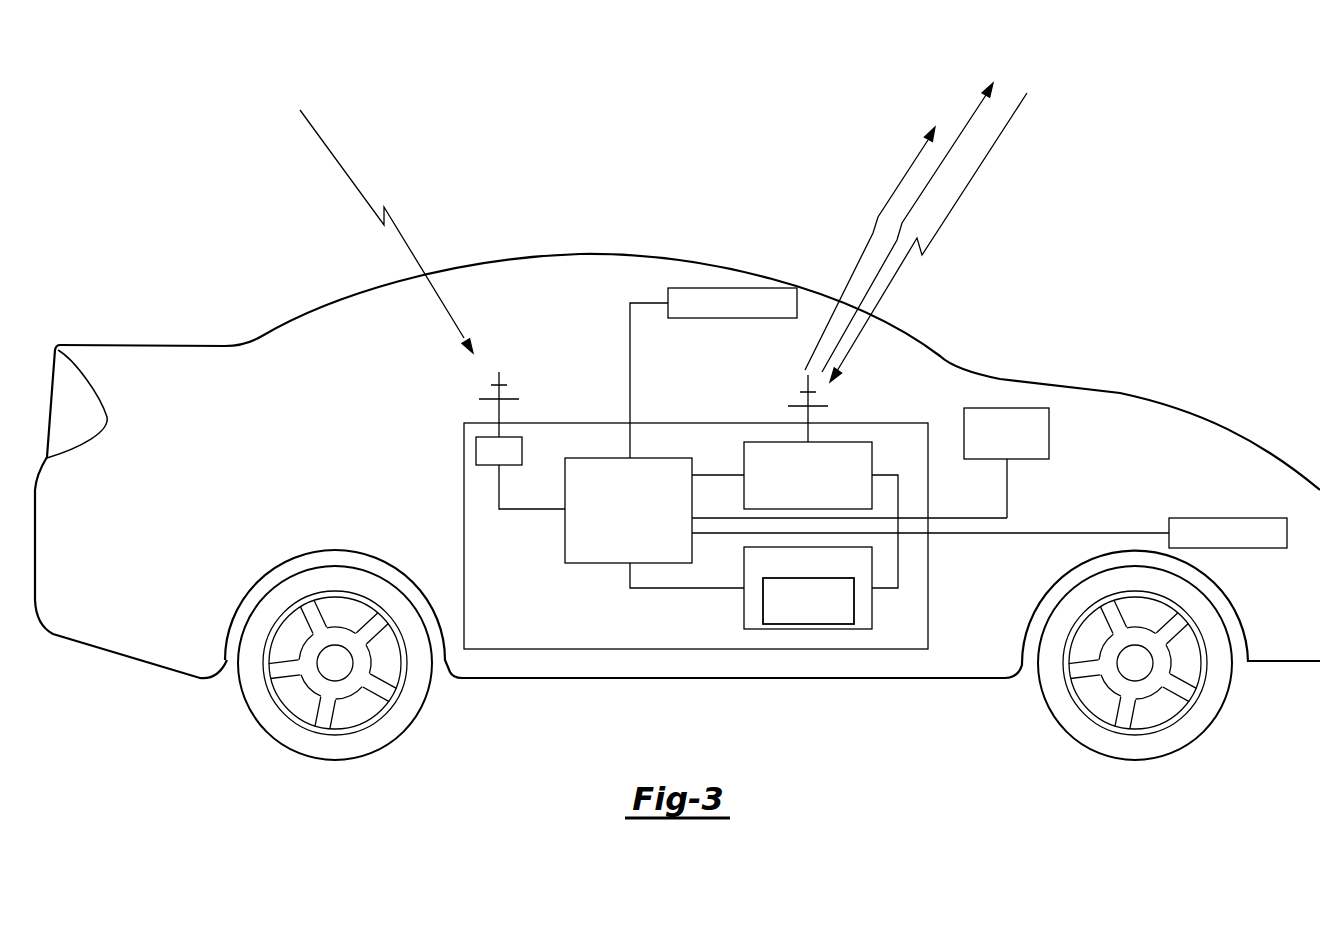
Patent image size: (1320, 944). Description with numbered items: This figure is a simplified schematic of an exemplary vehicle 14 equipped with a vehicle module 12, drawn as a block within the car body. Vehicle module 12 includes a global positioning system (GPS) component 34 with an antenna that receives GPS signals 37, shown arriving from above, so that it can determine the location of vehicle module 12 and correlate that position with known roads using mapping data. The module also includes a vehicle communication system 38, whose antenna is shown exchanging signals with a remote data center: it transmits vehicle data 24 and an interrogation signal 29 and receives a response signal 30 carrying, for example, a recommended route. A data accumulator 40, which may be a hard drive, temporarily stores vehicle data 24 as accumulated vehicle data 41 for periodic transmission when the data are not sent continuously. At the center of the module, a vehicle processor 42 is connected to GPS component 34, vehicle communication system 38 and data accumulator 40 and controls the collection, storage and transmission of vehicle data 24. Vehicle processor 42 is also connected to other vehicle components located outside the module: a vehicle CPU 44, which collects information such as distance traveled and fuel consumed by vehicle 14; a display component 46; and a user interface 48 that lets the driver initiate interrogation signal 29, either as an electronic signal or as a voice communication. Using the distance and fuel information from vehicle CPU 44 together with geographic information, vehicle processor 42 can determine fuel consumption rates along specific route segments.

The vehicle module 12 is at (464, 517).
The vehicle 14 is at (168, 345).
The vehicle data 24 is at (898, 190).
The interrogation signal 29 is at (975, 115).
The response signal 30 is at (960, 198).
The global positioning system (GPS) component 34 is at (476, 452).
The GPS signals 37 is at (322, 140).
The vehicle communication system 38 is at (850, 442).
The data accumulator 40 is at (872, 600).
The accumulated vehicle data 41 is at (763, 615).
The vehicle processor 42 is at (565, 546).
The vehicle CPU 44 is at (1253, 548).
The display component 46 is at (1049, 435).
The user interface 48 is at (733, 318).